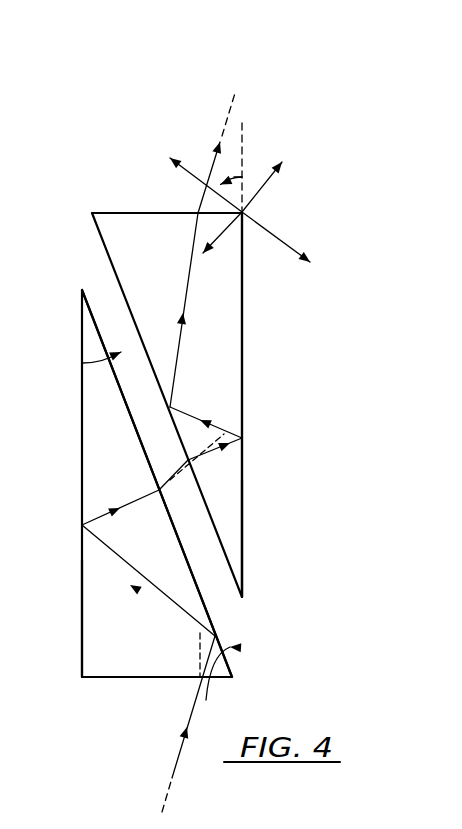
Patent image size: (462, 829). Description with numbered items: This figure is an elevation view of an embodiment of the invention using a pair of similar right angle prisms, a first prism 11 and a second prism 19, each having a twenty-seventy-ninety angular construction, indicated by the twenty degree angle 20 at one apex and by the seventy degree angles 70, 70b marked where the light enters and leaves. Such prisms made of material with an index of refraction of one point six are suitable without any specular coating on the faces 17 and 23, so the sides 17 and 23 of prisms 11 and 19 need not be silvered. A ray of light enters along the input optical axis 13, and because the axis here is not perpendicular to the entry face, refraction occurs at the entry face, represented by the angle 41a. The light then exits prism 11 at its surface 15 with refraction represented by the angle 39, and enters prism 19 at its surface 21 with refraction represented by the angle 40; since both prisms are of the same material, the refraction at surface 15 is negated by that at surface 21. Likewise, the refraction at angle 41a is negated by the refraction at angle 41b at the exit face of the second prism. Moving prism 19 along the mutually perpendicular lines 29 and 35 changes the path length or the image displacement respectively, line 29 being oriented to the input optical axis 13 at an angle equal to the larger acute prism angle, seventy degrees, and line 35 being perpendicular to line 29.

The prism 11 is at (82, 441).
The input optical axis 13 is at (171, 784).
The surface 15 is at (178, 558).
The side 17 is at (82, 613).
The prism 19 is at (245, 388).
The 20° prism angle 20 is at (82, 364).
The surface 21 is at (120, 283).
The side 23 is at (243, 535).
The path length line 29 is at (293, 248).
The displacement line 35 is at (267, 185).
The refraction angle 39 is at (185, 473).
The refraction angle 40 is at (213, 452).
The entry refraction angle 41a is at (200, 644).
The exit refraction angle 41b is at (214, 143).
The 70° angle of incidence 70 is at (236, 647).
The 70° angle of emergence 70b is at (233, 177).